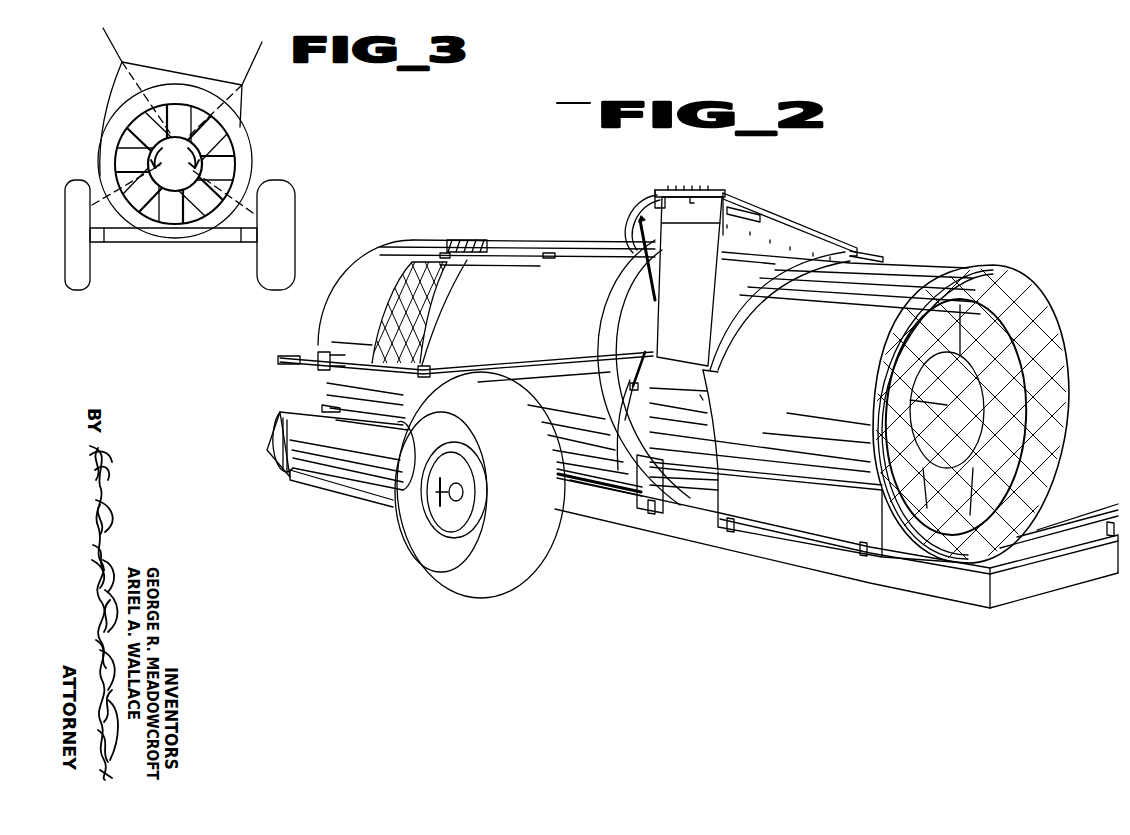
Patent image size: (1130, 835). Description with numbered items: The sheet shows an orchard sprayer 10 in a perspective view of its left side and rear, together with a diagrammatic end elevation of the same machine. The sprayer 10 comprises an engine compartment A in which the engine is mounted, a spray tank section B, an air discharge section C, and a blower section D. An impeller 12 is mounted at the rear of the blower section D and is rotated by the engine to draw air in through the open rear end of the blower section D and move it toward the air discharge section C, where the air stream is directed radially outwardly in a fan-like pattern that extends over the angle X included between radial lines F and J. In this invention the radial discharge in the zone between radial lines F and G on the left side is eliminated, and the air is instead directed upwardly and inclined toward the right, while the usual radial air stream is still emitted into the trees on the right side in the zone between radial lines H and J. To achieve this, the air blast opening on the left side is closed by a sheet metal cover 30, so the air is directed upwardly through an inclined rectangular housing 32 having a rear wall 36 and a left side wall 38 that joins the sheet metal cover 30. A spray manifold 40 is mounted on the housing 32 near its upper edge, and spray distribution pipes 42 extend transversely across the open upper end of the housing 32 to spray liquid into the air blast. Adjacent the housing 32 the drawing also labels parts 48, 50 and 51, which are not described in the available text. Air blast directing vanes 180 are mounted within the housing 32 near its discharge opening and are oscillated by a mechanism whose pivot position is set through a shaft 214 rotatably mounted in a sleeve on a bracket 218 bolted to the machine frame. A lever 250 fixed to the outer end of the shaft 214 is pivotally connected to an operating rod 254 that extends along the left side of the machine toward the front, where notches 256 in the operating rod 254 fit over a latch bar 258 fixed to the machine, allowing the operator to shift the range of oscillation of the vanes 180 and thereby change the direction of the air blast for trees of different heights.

In FIG. 3, the sprayer 10 is at (256, 128).
In FIG. 2, the sprayer 10 is at (940, 194).
In FIG. 3, the impeller 12 is at (222, 141).
In FIG. 2, the impeller 12 is at (1000, 347).
In FIG. 2, the sheet metal cover 30 is at (700, 421).
In FIG. 2, the rectangular housing 32 is at (739, 257).
In FIG. 2, the rear wall 36 is at (724, 293).
In FIG. 2, the left side wall 38 is at (676, 294).
In FIG. 2, the spray manifold 40 is at (664, 194).
In FIG. 2, the spray distribution pipes 42 is at (688, 195).
In FIG. 2, the lower strut 48 is at (657, 378).
In FIG. 2, the hoop 50 is at (640, 216).
In FIG. 2, the strut 51 is at (657, 266).
In FIG. 2, the air blast directing vanes 180 is at (721, 203).
In FIG. 2, the shaft 214 is at (630, 387).
In FIG. 2, the bracket 218 is at (702, 395).
In FIG. 2, the lever 250 is at (610, 375).
In FIG. 2, the operating rod 254 is at (543, 362).
In FIG. 2, the notches 256 is at (340, 367).
In FIG. 2, the latch bar 258 is at (320, 362).
In FIG. 2, the engine compartment A is at (386, 294).
In FIG. 2, the spray tank section B is at (515, 252).
In FIG. 3, the air discharge section C is at (162, 66).
In FIG. 2, the air discharge section C is at (788, 211).
In FIG. 3, the blower section D is at (252, 168).
In FIG. 2, the blower section D is at (922, 264).
In FIG. 3, the radial line F is at (112, 231).
In FIG. 3, the radial line G is at (113, 47).
In FIG. 3, the radial line H is at (247, 63).
In FIG. 3, the radial line J is at (228, 231).
In FIG. 3, the angle X is at (175, 152).